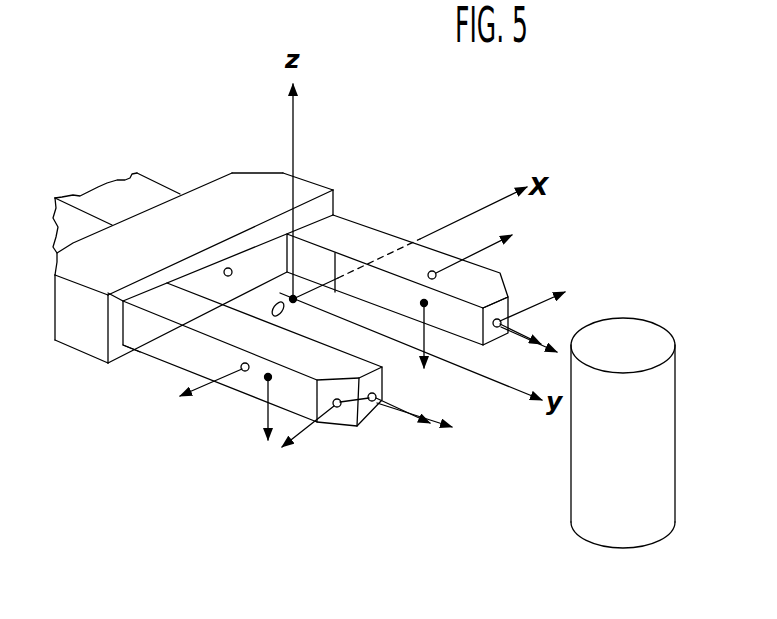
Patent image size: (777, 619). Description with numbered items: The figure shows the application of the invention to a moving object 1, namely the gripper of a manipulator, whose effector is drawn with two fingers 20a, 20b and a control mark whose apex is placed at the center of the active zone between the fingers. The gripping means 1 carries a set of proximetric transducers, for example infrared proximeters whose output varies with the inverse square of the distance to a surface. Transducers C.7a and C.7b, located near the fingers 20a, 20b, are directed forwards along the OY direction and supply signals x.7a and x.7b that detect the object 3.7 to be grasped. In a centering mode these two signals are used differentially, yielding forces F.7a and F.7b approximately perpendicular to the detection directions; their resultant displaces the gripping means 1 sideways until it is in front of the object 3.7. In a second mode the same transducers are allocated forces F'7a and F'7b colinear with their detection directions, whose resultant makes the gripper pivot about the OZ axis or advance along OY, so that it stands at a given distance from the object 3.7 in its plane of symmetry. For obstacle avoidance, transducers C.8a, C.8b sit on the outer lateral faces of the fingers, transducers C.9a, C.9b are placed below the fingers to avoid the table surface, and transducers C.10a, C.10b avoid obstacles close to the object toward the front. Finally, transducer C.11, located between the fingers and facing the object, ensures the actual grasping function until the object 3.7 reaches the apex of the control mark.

The moving object / gripping means 1 is at (312, 178).
The finger 20a is at (383, 231).
The finger 20b is at (182, 329).
The object to be grasped 3.7 is at (656, 305).
The transducer C.11 is at (227, 268).
The transducer C.8a is at (435, 272).
The transducer C.9a is at (428, 304).
The transducer C.10a is at (557, 283).
The proximetric transducer C.7a is at (500, 319).
The force F.7a is at (557, 300).
The force F'7a is at (517, 354).
The signal x.7a is at (552, 318).
The transducer C.8b is at (244, 364).
The transducer C.9b is at (266, 383).
The transducer C.10b is at (339, 409).
The proximetric transducer C.7b is at (374, 402).
The force F.7b is at (315, 430).
The force F'7b is at (449, 420).
The signal x.7b is at (383, 430).